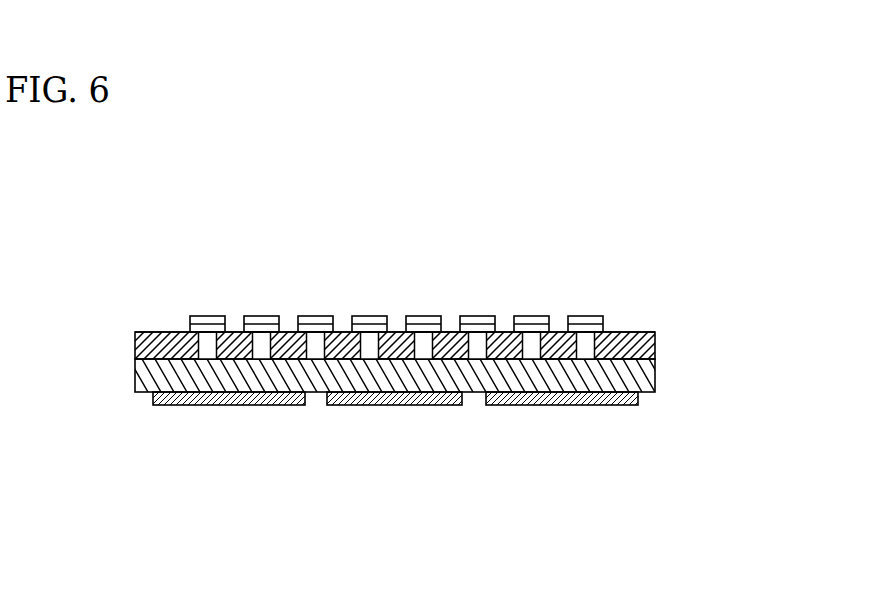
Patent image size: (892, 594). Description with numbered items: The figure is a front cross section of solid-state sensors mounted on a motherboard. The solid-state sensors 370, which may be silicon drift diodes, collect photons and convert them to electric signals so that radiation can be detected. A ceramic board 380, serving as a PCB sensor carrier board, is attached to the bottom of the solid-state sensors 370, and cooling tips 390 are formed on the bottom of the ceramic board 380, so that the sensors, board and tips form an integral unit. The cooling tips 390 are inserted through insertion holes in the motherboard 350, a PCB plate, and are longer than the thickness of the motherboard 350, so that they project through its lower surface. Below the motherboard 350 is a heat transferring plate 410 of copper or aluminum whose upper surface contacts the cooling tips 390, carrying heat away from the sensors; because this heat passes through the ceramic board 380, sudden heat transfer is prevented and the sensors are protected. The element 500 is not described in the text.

The motherboard 350 is at (152, 332).
The solid-state sensor 370 is at (206, 324).
The ceramic board 380 is at (598, 329).
The cooling tip 390 is at (585, 350).
The heat transferring plate 410 is at (657, 379).
The bottom conductive pattern 500 is at (533, 405).